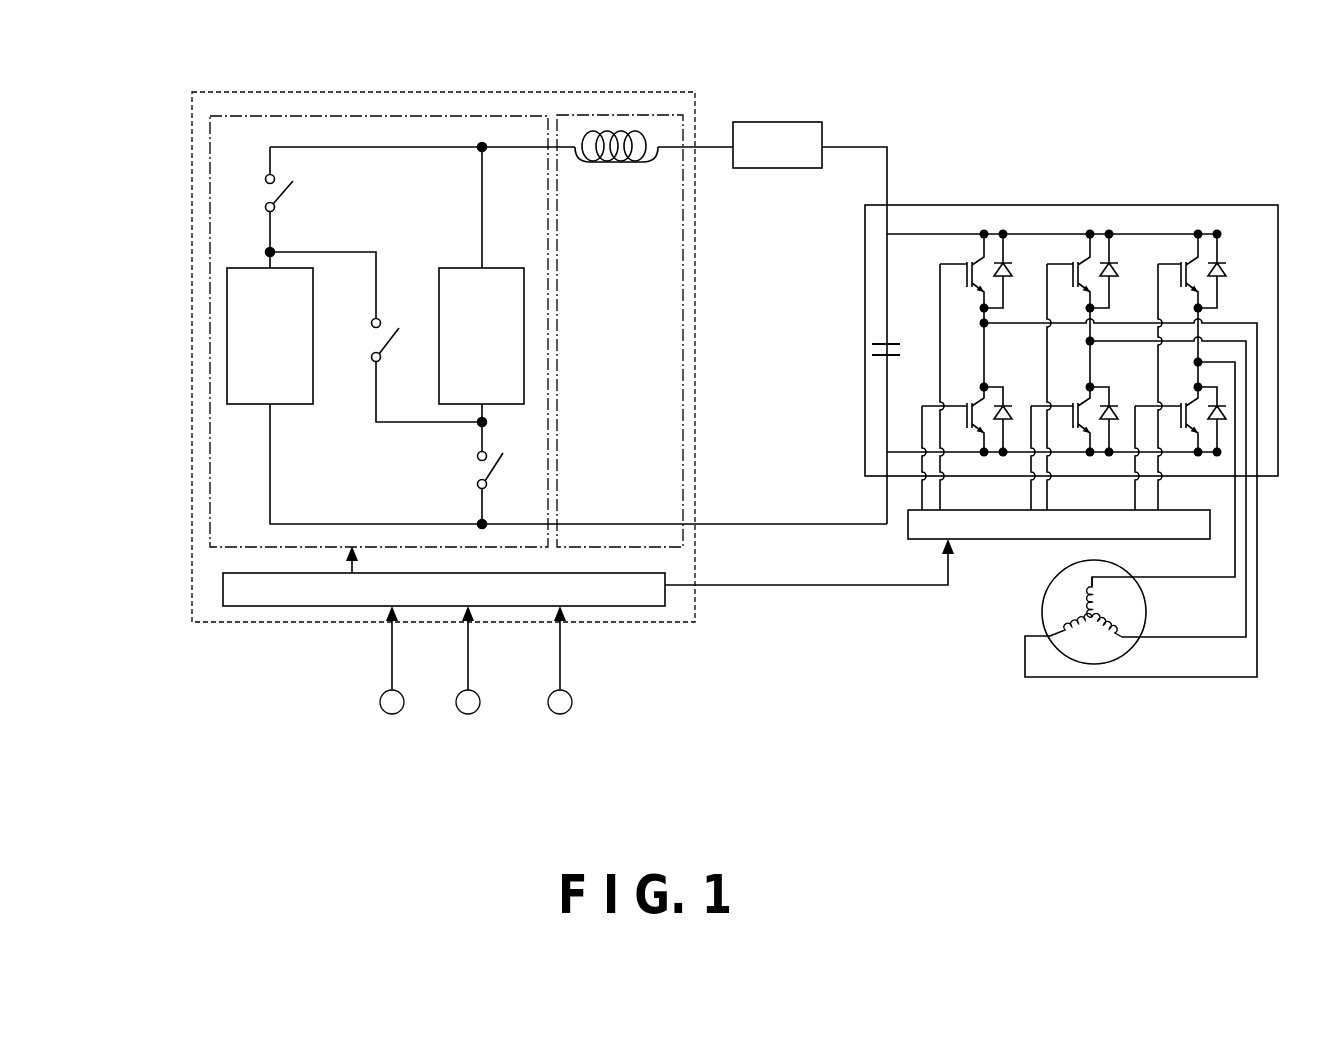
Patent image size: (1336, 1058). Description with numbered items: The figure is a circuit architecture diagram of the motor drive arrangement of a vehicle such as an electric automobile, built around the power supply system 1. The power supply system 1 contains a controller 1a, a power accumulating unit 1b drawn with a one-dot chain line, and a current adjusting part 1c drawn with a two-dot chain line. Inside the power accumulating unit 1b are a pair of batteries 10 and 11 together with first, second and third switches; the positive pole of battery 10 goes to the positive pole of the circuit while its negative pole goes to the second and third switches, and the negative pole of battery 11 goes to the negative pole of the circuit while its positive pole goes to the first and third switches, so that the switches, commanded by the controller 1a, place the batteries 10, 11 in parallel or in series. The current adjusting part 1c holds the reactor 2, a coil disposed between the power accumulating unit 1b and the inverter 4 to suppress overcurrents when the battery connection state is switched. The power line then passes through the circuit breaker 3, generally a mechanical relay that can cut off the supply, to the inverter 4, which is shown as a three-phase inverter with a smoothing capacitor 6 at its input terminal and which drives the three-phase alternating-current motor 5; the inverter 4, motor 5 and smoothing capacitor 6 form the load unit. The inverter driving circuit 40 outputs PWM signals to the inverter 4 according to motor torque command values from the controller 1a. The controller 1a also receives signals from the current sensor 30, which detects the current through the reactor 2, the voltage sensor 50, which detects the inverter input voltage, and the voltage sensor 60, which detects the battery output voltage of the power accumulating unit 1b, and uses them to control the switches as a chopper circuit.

The power supply system 1 is at (312, 94).
The controller 1a is at (241, 591).
The power accumulating unit 1b is at (220, 148).
The current adjusting part 1c is at (653, 326).
The reactor 2 is at (603, 130).
The circuit breaker 3 is at (778, 122).
The inverter 4 is at (989, 218).
The motor 5 is at (1102, 657).
The smoothing capacitor 6 is at (872, 344).
The battery 10 is at (473, 294).
The battery 11 is at (252, 357).
The current sensor 30 is at (572, 702).
The inverter driving circuit 40 is at (1032, 537).
The voltage sensor 50 is at (480, 702).
The voltage sensor 60 is at (404, 702).